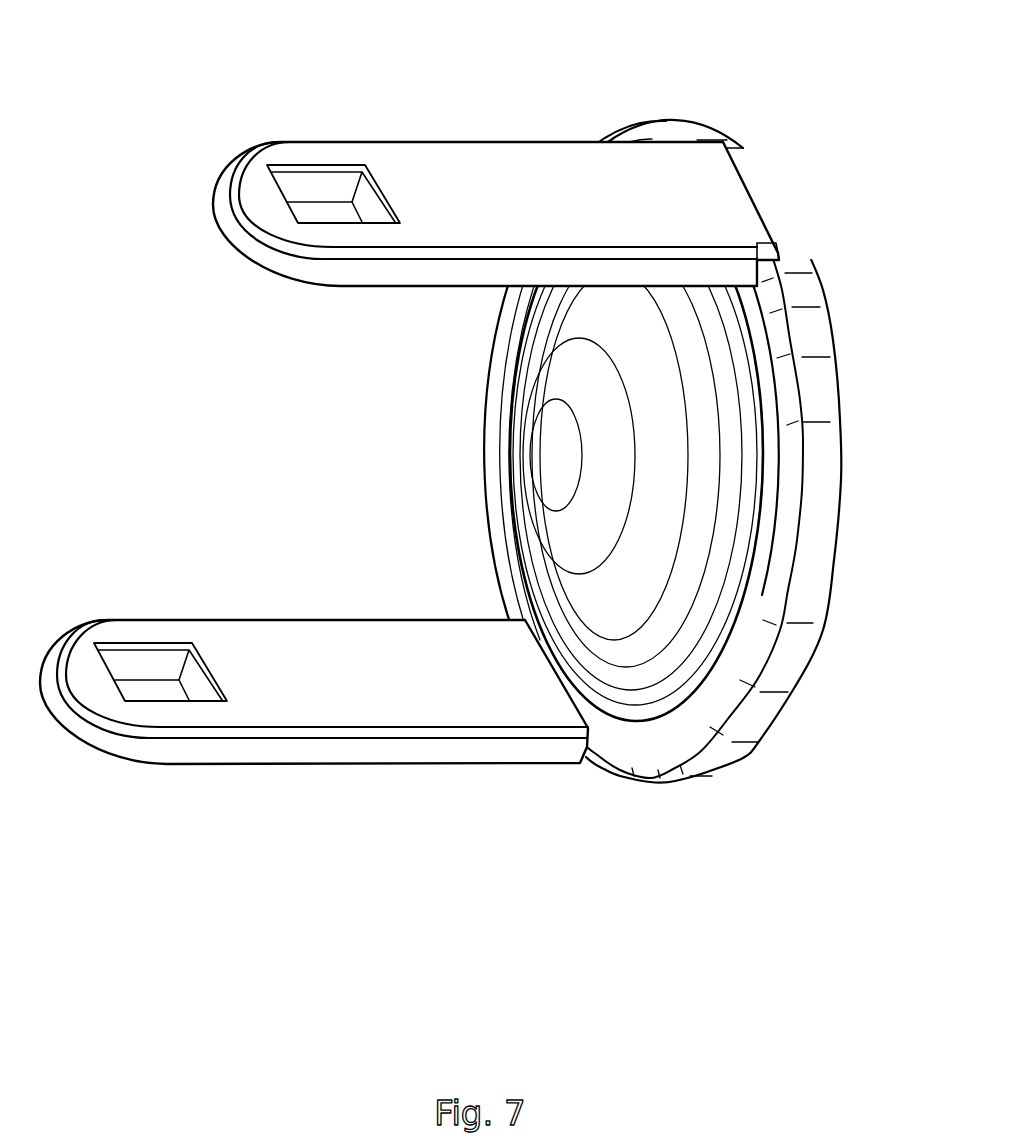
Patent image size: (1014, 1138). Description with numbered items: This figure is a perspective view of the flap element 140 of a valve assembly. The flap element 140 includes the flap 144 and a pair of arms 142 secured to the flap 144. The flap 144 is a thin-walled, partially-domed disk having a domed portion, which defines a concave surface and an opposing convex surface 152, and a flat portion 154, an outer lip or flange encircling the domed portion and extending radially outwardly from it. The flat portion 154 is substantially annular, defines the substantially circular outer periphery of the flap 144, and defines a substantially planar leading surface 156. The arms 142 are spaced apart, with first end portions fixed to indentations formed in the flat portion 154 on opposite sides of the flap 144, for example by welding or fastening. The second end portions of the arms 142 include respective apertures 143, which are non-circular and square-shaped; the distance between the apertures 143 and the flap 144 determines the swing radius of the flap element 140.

The flap element 140 is at (463, 423).
The arms 142 is at (409, 429).
The apertures 143 is at (305, 285).
The flap 144 is at (613, 451).
The convex surface 152 is at (545, 381).
The flat portion 154 is at (782, 666).
The leading surface 156 is at (838, 390).